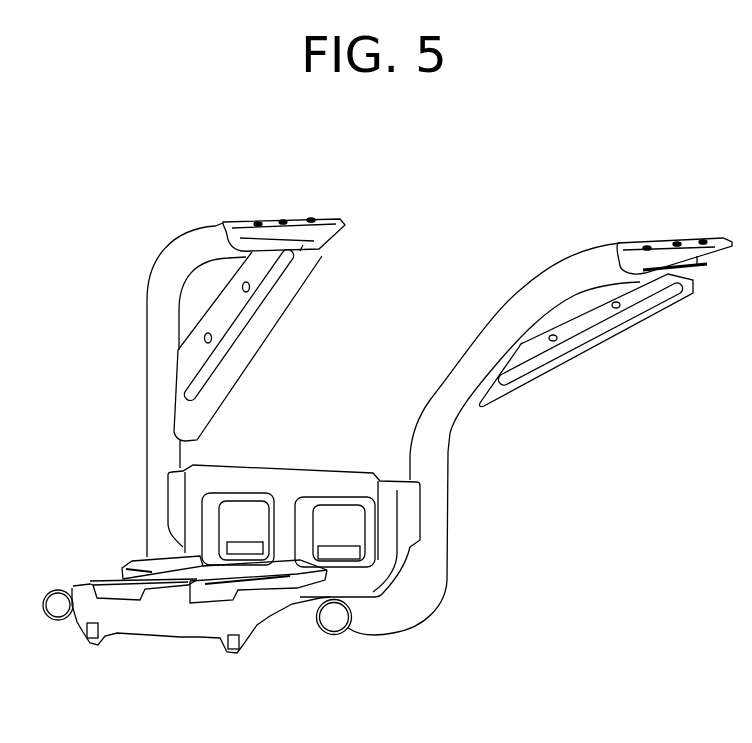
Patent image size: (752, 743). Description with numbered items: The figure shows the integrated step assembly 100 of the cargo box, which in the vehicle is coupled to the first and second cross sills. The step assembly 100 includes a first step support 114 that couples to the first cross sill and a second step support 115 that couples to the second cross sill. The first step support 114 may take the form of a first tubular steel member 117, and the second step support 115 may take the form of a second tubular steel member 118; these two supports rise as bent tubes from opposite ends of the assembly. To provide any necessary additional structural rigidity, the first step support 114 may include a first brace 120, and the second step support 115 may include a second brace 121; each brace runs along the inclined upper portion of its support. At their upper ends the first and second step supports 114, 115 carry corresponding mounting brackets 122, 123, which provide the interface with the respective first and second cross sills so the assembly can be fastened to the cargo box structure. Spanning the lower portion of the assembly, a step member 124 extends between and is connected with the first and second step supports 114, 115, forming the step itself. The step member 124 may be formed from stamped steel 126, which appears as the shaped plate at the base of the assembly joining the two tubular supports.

The integrated step assembly 100 is at (530, 580).
The first step support 114 is at (147, 322).
The second step support 115 is at (447, 451).
The first tubular steel member 117 is at (165, 393).
The second tubular steel member 118 is at (518, 298).
The first brace 120 is at (213, 363).
The second brace 121 is at (558, 352).
The mounting bracket 122 is at (296, 219).
The mounting bracket 123 is at (660, 243).
The step member 124 is at (266, 657).
The stamped steel 126 is at (158, 625).